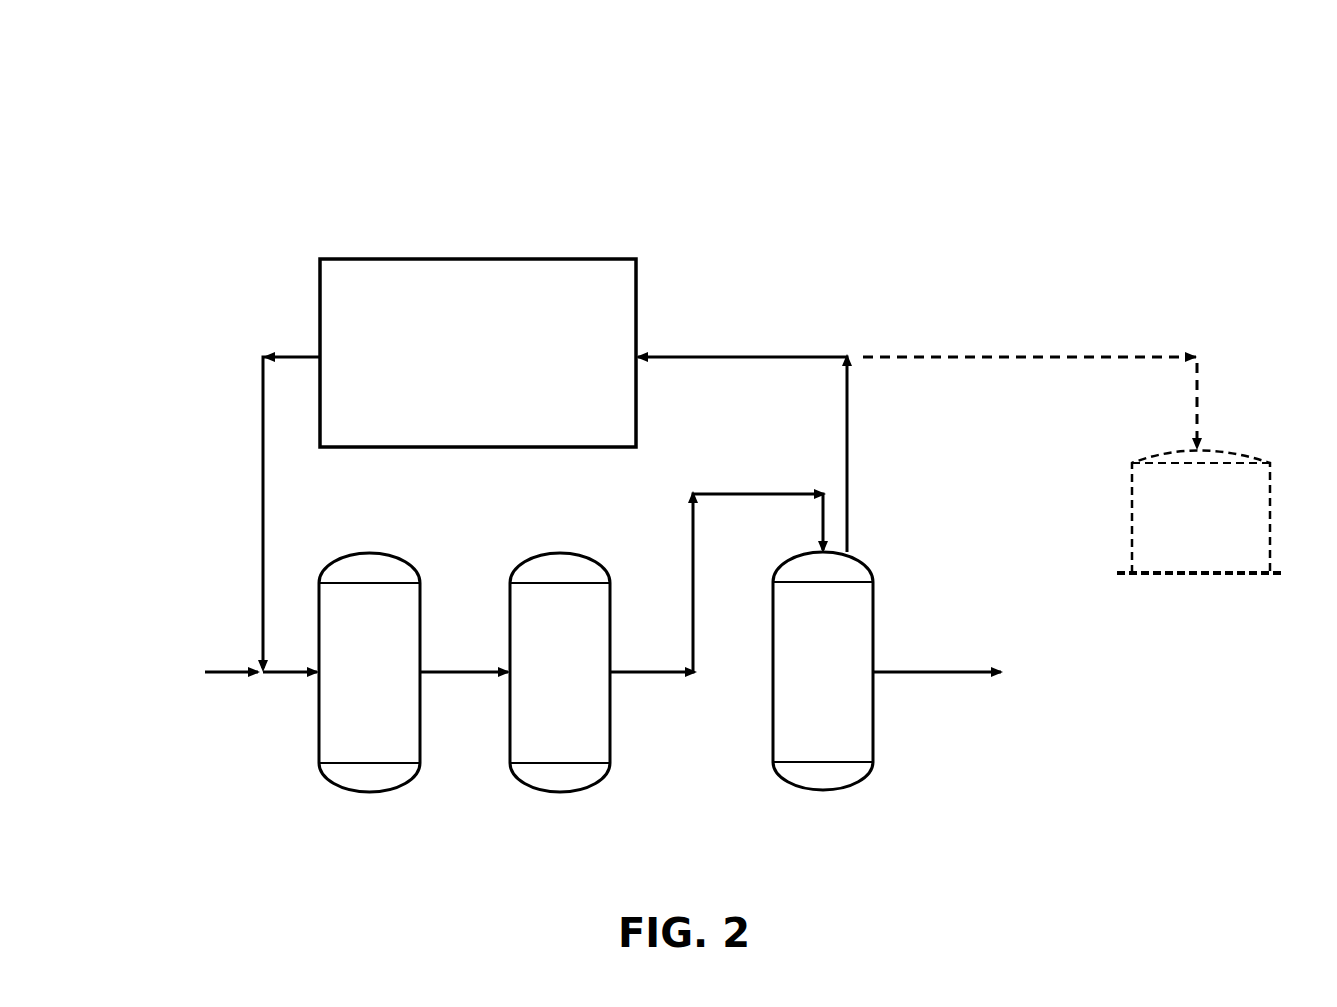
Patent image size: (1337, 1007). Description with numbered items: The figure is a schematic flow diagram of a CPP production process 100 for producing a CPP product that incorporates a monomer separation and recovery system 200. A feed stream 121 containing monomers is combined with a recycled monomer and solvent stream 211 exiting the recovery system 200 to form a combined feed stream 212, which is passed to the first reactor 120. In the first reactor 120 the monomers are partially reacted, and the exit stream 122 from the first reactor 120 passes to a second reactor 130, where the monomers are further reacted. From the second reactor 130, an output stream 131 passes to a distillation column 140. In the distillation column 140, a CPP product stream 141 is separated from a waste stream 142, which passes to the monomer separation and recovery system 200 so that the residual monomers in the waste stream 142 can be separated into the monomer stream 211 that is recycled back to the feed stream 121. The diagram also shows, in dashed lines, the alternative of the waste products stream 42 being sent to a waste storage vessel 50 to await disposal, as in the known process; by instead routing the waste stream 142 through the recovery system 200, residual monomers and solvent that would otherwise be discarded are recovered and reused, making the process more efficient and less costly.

The CPP production process 100 is at (724, 102).
The monomer separation and recovery system 200 is at (474, 244).
The first reactor 120 is at (369, 672).
The second reactor 130 is at (560, 672).
The distillation column 140 is at (823, 671).
The waste storage vessel 50 is at (1199, 512).
The waste products stream 42 is at (1090, 357).
The feed stream 121 is at (233, 668).
The exit stream 122 is at (490, 668).
The output stream 131 is at (690, 541).
The CPP product stream 141 is at (935, 670).
The waste stream 142 is at (737, 357).
The monomer stream and solvent 211 is at (258, 485).
The combined feed stream 212 is at (296, 676).